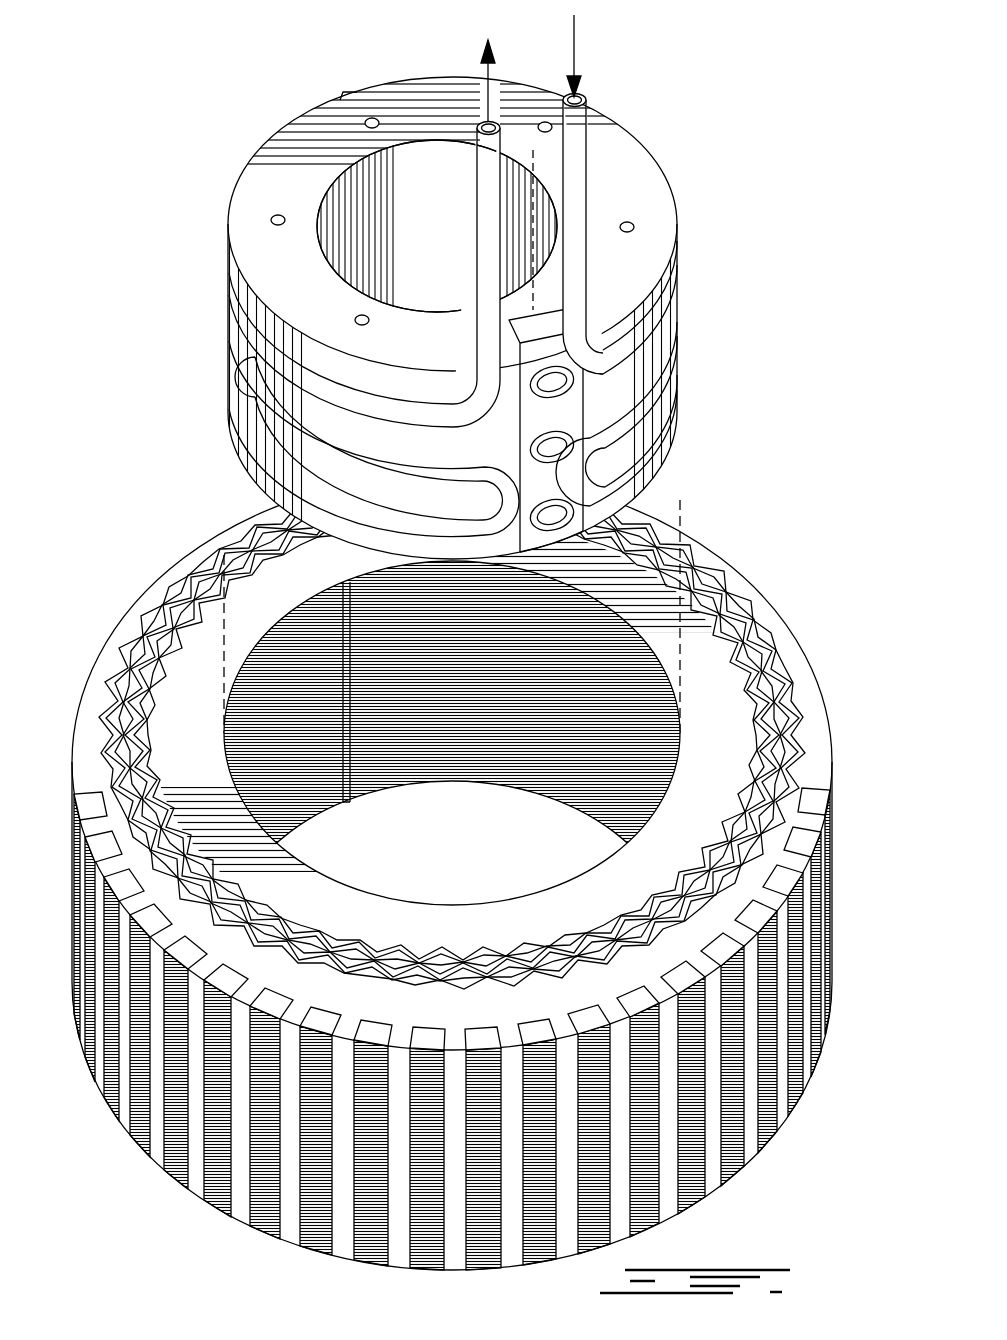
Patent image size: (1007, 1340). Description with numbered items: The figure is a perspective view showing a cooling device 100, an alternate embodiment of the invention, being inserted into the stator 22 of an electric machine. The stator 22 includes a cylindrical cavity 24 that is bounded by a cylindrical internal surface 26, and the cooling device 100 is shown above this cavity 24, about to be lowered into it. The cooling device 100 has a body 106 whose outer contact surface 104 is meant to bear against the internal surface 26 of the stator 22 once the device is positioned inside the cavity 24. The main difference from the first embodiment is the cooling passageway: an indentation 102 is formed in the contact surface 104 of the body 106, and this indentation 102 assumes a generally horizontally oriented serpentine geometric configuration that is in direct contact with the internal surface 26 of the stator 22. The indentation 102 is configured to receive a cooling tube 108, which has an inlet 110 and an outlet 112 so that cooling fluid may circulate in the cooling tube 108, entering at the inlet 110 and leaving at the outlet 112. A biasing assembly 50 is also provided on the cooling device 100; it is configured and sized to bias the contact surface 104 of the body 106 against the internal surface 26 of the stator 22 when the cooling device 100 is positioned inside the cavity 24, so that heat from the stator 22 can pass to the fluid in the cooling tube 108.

The cooling device 100 is at (180, 152).
The indentation 102 is at (677, 337).
The contact surface 104 is at (679, 262).
The body 106 is at (630, 195).
The cooling tube 108 is at (575, 168).
The inlet 110 is at (578, 96).
The outlet 112 is at (483, 122).
The biasing assembly 50 is at (575, 409).
The stator 22 is at (703, 655).
The cylindrical cavity 24 is at (468, 849).
The cylindrical internal surface 26 is at (695, 548).